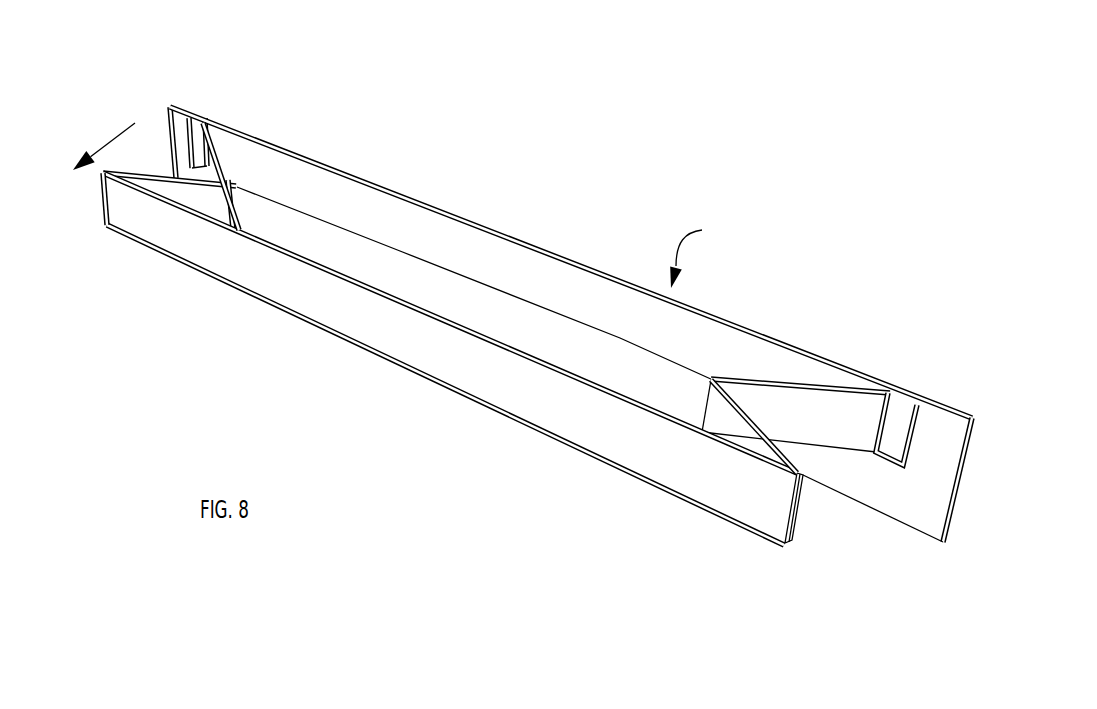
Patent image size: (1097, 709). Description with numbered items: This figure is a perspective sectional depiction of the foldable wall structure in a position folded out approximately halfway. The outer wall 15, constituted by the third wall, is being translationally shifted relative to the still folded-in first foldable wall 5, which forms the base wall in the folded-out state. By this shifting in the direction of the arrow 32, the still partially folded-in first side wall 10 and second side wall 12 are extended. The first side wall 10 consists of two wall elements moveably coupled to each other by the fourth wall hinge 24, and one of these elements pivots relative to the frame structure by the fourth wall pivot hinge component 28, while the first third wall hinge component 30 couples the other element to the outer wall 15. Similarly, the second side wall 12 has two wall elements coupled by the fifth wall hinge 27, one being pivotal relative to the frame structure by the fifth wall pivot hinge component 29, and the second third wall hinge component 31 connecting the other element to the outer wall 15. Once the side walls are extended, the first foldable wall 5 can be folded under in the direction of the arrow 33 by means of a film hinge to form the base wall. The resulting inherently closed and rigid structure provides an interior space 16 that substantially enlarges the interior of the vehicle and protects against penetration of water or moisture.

The first foldable wall 5 is at (582, 280).
The first side wall 10 is at (155, 138).
The second side wall 12 is at (875, 543).
The outer wall 15 is at (470, 382).
The interior space 16 is at (601, 367).
The fourth wall hinge 24 is at (240, 190).
The fifth wall hinge 27 is at (711, 379).
The fourth wall pivot hinge component 28 is at (221, 140).
The fifth wall pivot hinge component 29 is at (889, 388).
The first third wall hinge component 30 is at (104, 218).
The second third wall hinge component 31 is at (787, 548).
The arrow 32 is at (110, 130).
The arrow 33 is at (680, 247).